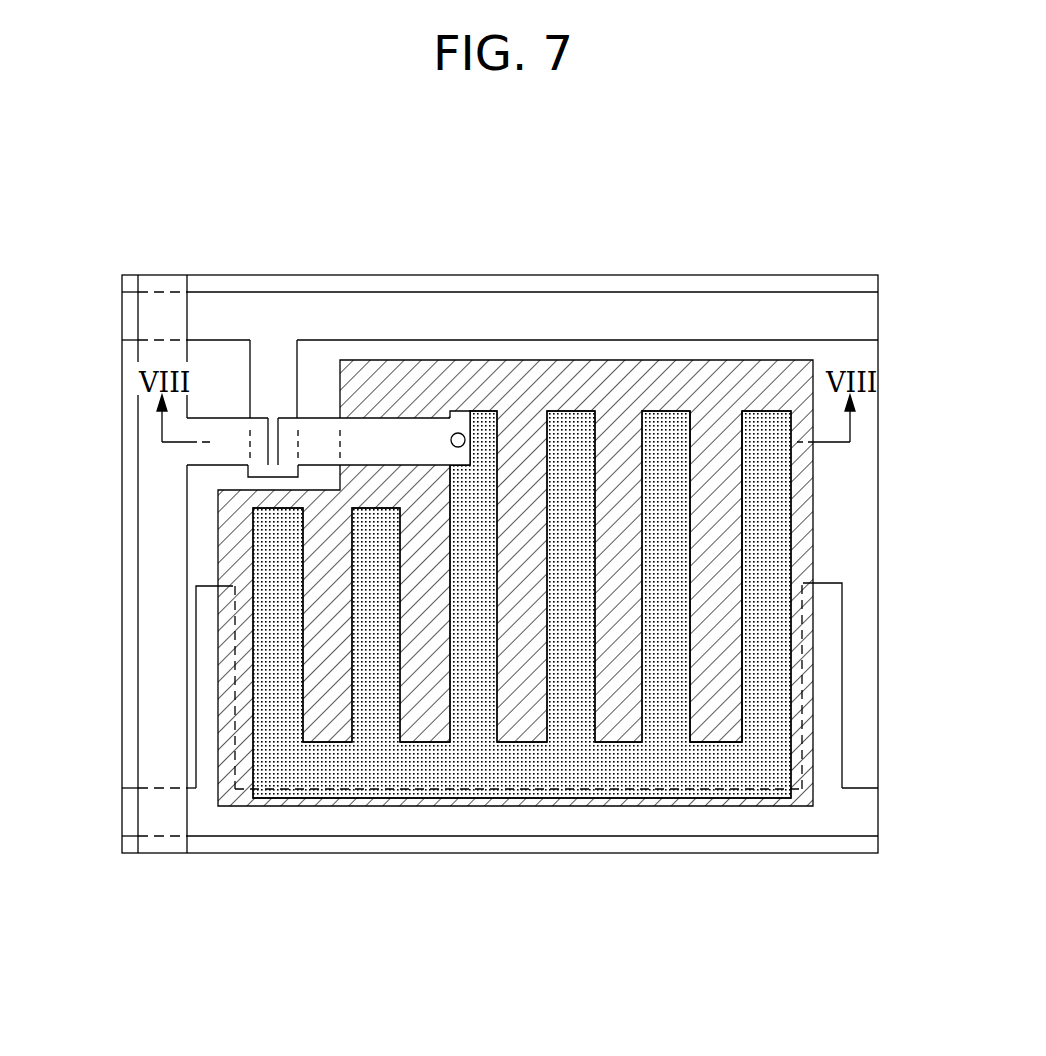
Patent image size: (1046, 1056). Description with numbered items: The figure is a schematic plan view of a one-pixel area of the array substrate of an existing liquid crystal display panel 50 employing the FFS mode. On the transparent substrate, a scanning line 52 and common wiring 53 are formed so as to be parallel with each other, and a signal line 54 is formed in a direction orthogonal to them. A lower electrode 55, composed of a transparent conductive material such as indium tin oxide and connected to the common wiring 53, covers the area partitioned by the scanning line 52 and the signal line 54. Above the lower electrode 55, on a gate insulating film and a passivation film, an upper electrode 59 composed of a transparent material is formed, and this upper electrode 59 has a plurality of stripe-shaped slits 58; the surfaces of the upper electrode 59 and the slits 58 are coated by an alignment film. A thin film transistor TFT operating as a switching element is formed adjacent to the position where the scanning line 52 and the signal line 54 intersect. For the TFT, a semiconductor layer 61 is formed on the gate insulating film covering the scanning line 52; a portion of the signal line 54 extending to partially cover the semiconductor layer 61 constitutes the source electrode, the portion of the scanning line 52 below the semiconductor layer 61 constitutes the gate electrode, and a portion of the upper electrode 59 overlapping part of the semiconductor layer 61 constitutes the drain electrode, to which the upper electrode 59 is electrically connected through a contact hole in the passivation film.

The liquid crystal display panel 50 is at (338, 109).
The scanning line 52 is at (405, 313).
The common wiring 53 is at (570, 820).
The signal line 54 is at (170, 549).
The lower electrode 55 is at (542, 360).
The slit 58 is at (735, 630).
The upper electrode 59 is at (355, 767).
The semiconductor layer 61 is at (464, 433).
The thin film transistor TFT is at (274, 395).